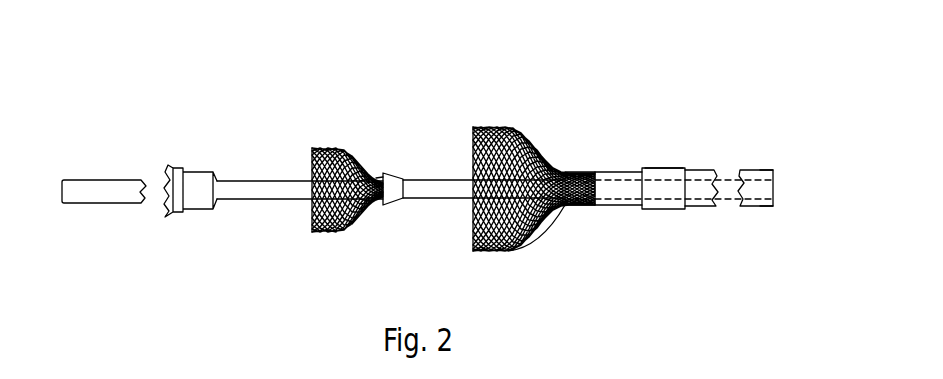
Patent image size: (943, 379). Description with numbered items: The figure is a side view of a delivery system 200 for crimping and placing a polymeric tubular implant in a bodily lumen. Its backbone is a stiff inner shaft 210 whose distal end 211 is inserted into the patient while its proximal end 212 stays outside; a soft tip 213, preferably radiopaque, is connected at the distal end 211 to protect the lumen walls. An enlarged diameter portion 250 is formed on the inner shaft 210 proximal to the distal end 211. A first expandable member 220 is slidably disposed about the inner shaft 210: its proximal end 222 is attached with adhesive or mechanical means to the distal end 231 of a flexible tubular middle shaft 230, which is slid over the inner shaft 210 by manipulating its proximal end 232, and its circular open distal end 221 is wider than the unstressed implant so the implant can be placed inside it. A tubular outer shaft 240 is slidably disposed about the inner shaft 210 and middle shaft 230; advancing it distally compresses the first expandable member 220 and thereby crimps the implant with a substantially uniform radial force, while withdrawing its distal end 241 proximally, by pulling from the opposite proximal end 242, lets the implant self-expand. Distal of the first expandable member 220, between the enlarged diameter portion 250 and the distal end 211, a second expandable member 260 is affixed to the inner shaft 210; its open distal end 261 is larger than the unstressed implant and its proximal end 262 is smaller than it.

The delivery system 200 is at (213, 80).
The inner shaft 210 is at (245, 202).
The distal end of inner shaft 211 is at (223, 200).
The proximal end of inner shaft 212 is at (768, 187).
The soft tip 213 is at (91, 182).
The first expandable member 220 is at (527, 133).
The open distal end of first expandable member 221 is at (473, 123).
The proximal end of first expandable member 222 is at (587, 172).
The tubular middle shaft 230 is at (616, 205).
The distal end of tubular middle shaft 231 is at (582, 208).
The proximal end of tubular middle shaft 232 is at (774, 172).
The tubular outer shaft 240 is at (670, 210).
The distal end of outer shaft 241 is at (643, 163).
The outer tube end edge 242 is at (772, 207).
The enlarged diameter portion 250 is at (393, 173).
The second expandable member 260 is at (325, 143).
The distal end of second expandable member 261 is at (309, 146).
The proximal end of second expandable member 262 is at (378, 202).